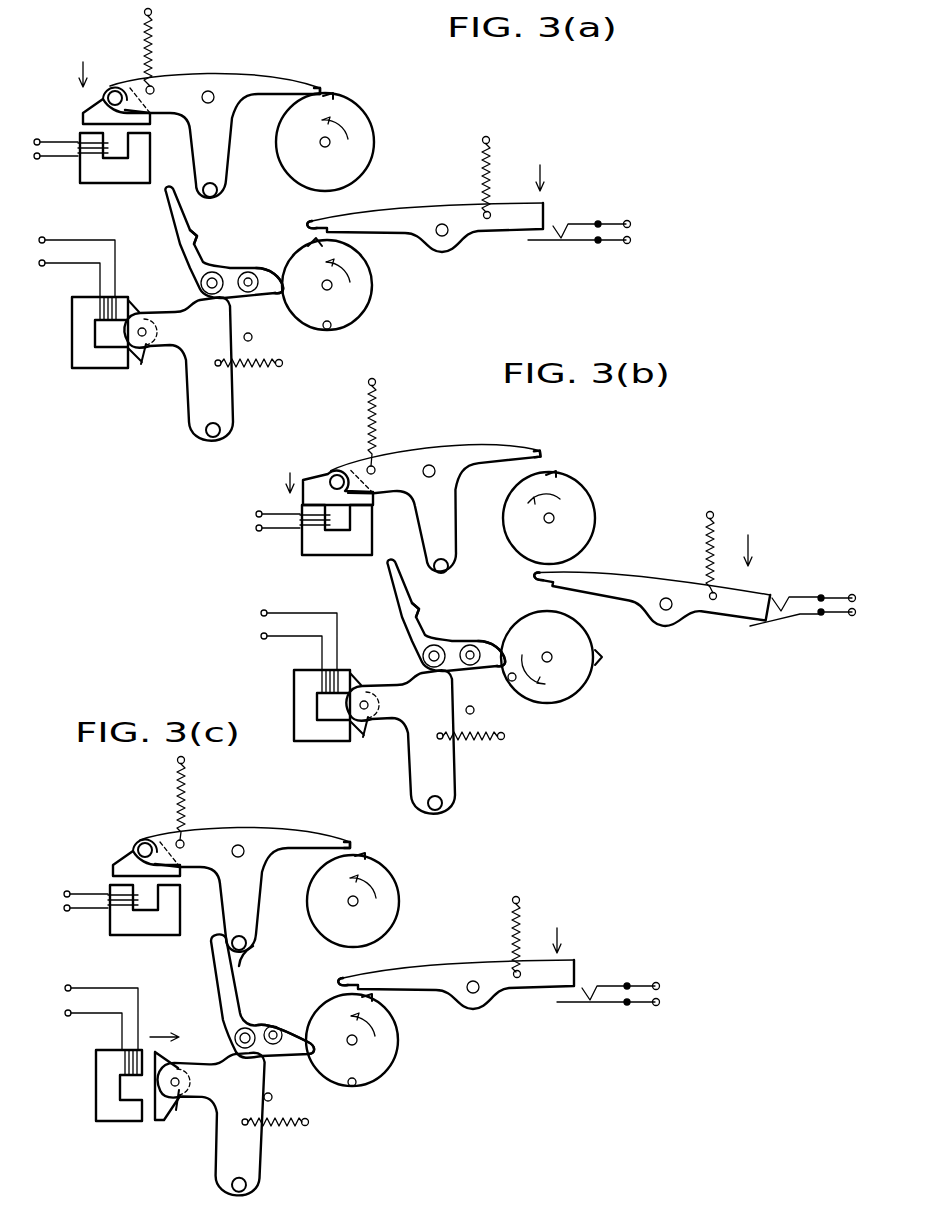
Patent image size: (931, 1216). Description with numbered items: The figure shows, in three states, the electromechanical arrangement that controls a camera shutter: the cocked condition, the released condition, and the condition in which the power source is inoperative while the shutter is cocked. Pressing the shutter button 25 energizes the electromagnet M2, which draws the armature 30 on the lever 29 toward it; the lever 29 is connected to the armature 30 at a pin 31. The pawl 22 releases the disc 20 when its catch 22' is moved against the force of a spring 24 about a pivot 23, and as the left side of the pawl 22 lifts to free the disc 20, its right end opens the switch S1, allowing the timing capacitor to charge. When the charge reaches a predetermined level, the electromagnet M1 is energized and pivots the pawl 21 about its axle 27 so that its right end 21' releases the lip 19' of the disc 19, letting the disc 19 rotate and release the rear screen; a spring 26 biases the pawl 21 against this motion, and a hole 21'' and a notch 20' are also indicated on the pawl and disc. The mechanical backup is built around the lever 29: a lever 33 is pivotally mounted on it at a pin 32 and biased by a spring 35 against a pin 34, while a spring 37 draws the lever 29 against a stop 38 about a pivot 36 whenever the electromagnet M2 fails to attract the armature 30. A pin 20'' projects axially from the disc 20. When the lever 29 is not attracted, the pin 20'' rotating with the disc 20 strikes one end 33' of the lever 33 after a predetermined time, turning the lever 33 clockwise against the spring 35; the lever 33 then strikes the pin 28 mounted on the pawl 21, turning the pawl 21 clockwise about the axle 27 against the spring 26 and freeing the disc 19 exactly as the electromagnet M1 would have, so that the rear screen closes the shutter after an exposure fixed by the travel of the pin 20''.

In FIG. 3A, the disc 19 is at (343, 142).
In FIG. 3B, the disc 19 is at (567, 518).
In FIG. 3C, the disc 19 is at (369, 901).
In FIG. 3A, the lip 19' is at (364, 95).
In FIG. 3B, the lip 19' is at (587, 468).
In FIG. 3C, the lip 19' is at (379, 836).
In FIG. 3A, the disc 20 is at (346, 285).
In FIG. 3B, the disc 20 is at (558, 673).
In FIG. 3C, the disc 20 is at (368, 1040).
In FIG. 3A, the notch of second cam disc 20' is at (363, 245).
In FIG. 3B, the notch of second cam disc 20' is at (620, 675).
In FIG. 3C, the notch of second cam disc 20' is at (400, 1014).
In FIG. 3A, the pin 20'' is at (339, 341).
In FIG. 3B, the pin 20'' is at (533, 707).
In FIG. 3C, the pin 20'' is at (375, 1092).
In FIG. 3A, the rear screen locking pawl 21 is at (215, 119).
In FIG. 3B, the rear screen locking pawl 21 is at (440, 498).
In FIG. 3C, the rear screen locking pawl 21 is at (245, 872).
In FIG. 3A, the right end of pawl 21' is at (341, 67).
In FIG. 3B, the right end of pawl 21' is at (561, 440).
In FIG. 3C, the right end of pawl 21' is at (351, 826).
In FIG. 3A, the spring attachment hole of first lever 21'' is at (136, 52).
In FIG. 3B, the spring attachment hole of first lever 21'' is at (352, 447).
In FIG. 3C, the spring attachment hole of first lever 21'' is at (161, 819).
In FIG. 3A, the pawl 22 is at (425, 209).
In FIG. 3B, the pawl 22 is at (649, 589).
In FIG. 3C, the pawl 22 is at (456, 969).
In FIG. 3A, the catch 22' is at (347, 204).
In FIG. 3B, the catch 22' is at (517, 575).
In FIG. 3C, the catch 22' is at (326, 964).
In FIG. 3A, the pivot 23 is at (446, 240).
In FIG. 3B, the pivot 23 is at (668, 612).
In FIG. 3C, the pivot 23 is at (476, 996).
In FIG. 3A, the spring 24 is at (492, 162).
In FIG. 3B, the spring 24 is at (712, 526).
In FIG. 3C, the spring 24 is at (528, 910).
In FIG. 3A, the shutter button 25 is at (100, 92).
In FIG. 3B, the shutter button 25 is at (318, 486).
In FIG. 3C, the shutter button 25 is at (123, 856).
In FIG. 3A, the spring 26 is at (151, 47).
In FIG. 3B, the spring 26 is at (376, 410).
In FIG. 3C, the spring 26 is at (184, 793).
In FIG. 3A, the axle 27 is at (212, 92).
In FIG. 3B, the axle 27 is at (428, 465).
In FIG. 3C, the axle 27 is at (241, 845).
In FIG. 3A, the pin 28 is at (218, 192).
In FIG. 3B, the pin 28 is at (450, 568).
In FIG. 3C, the pin 28 is at (249, 940).
In FIG. 3A, the lever 29 is at (188, 396).
In FIG. 3B, the lever 29 is at (416, 770).
In FIG. 3C, the lever 29 is at (209, 1144).
In FIG. 3A, the armature 30 is at (130, 316).
In FIG. 3B, the armature 30 is at (356, 690).
In FIG. 3C, the armature 30 is at (193, 1057).
In FIG. 3A, the pin 31 is at (138, 349).
In FIG. 3B, the pin 31 is at (370, 715).
In FIG. 3C, the pin 31 is at (170, 1082).
In FIG. 3A, the pin 32 is at (224, 275).
In FIG. 3B, the pin 32 is at (442, 648).
In FIG. 3C, the pin 32 is at (249, 1028).
In FIG. 3A, the lever 33 is at (201, 243).
In FIG. 3B, the lever 33 is at (427, 616).
In FIG. 3C, the lever 33 is at (246, 995).
In FIG. 3A, the end of lever 33' is at (275, 299).
In FIG. 3B, the end of lever 33' is at (485, 671).
In FIG. 3C, the end of lever 33' is at (286, 1055).
In FIG. 3A, the pin 34 is at (248, 292).
In FIG. 3B, the pin 34 is at (476, 648).
In FIG. 3C, the pin 34 is at (277, 1028).
In FIG. 3A, the spring 35 is at (200, 240).
In FIG. 3B, the spring 35 is at (420, 614).
In FIG. 3C, the spring 35 is at (247, 970).
In FIG. 3A, the pivot 36 is at (206, 432).
In FIG. 3B, the pivot 36 is at (443, 808).
In FIG. 3C, the pivot 36 is at (228, 1185).
In FIG. 3A, the spring 37 is at (250, 370).
In FIG. 3B, the spring 37 is at (475, 742).
In FIG. 3C, the spring 37 is at (286, 1126).
In FIG. 3A, the stop 38 is at (252, 340).
In FIG. 3B, the stop 38 is at (475, 711).
In FIG. 3C, the stop 38 is at (273, 1099).
In FIG. 3A, the electromagnet M1 is at (95, 172).
In FIG. 3B, the electromagnet M1 is at (312, 548).
In FIG. 3C, the electromagnet M1 is at (130, 926).
In FIG. 3A, the electromagnet M2 is at (82, 333).
In FIG. 3B, the electromagnet M2 is at (305, 700).
In FIG. 3C, the electromagnet M2 is at (96, 1086).
In FIG. 3A, the switch S1 is at (579, 251).
In FIG. 3B, the switch S1 is at (803, 628).
In FIG. 3C, the switch S1 is at (608, 1013).